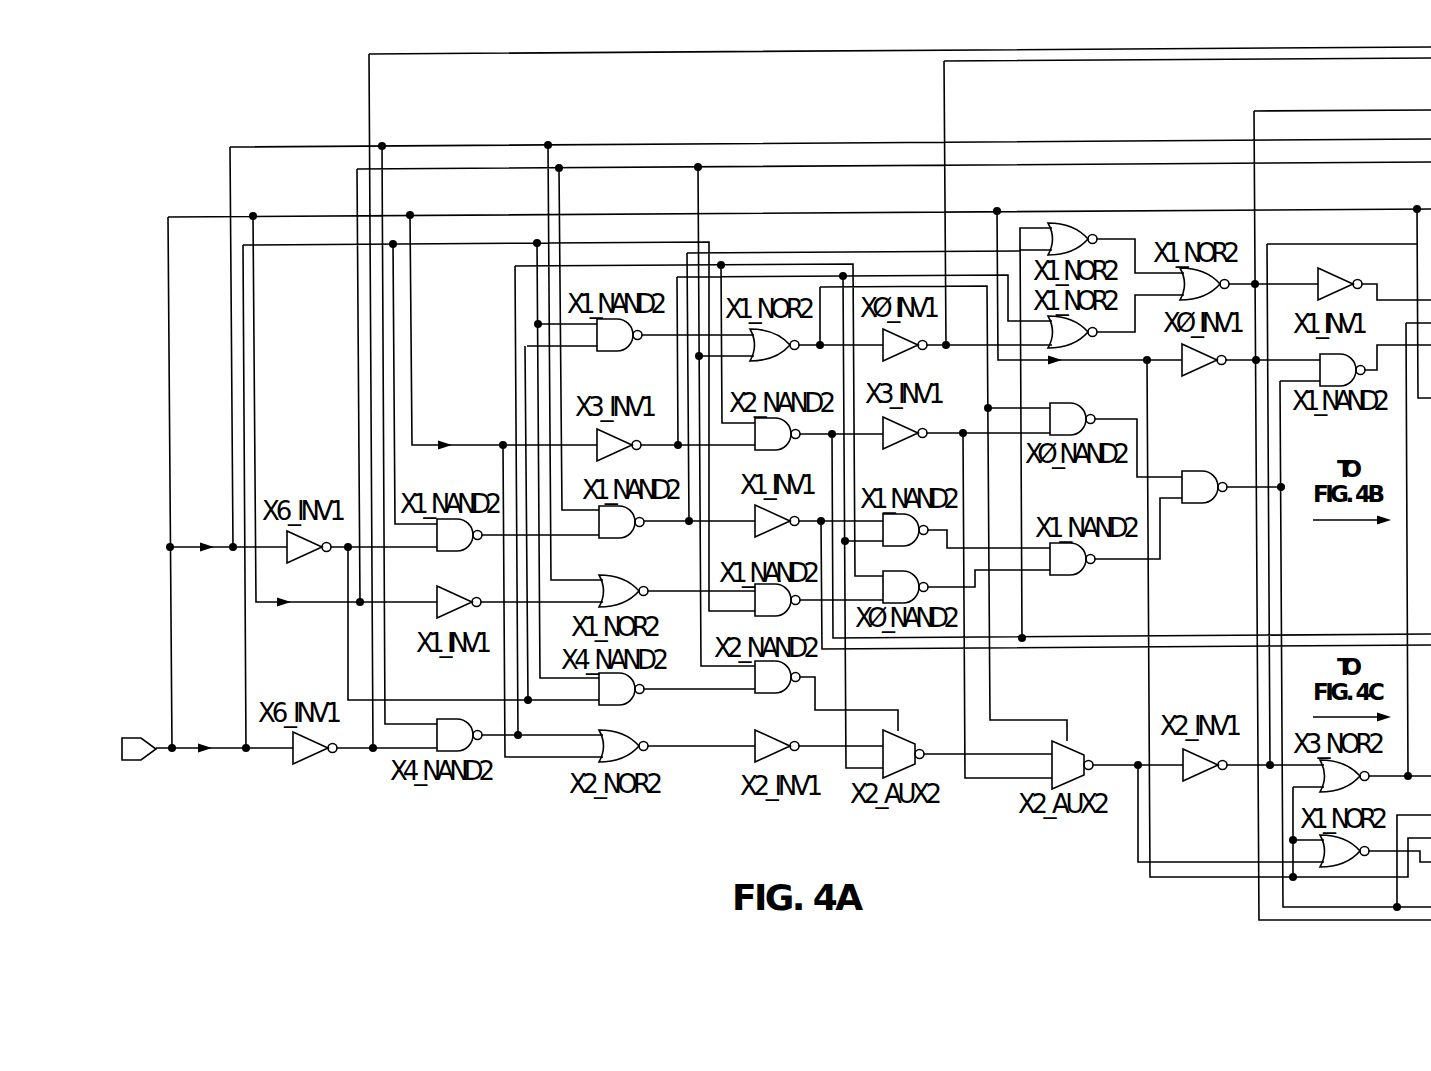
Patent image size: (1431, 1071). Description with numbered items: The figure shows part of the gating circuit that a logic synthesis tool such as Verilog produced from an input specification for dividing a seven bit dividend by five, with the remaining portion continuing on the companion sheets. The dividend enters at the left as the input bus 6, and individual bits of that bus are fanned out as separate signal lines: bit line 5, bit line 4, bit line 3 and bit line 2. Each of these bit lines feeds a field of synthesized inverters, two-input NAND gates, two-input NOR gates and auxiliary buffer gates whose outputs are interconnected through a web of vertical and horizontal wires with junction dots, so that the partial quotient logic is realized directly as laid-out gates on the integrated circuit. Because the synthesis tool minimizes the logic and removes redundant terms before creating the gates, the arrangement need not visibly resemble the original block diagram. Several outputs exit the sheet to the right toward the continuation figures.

The input signal X[2] 2 is at (1089, 302).
The input signal X[3] 3 is at (503, 349).
The input signal X[4] 4 is at (228, 563).
The input signal X[5] 5 is at (296, 500).
The input bus X[6:0] 6 is at (131, 735).